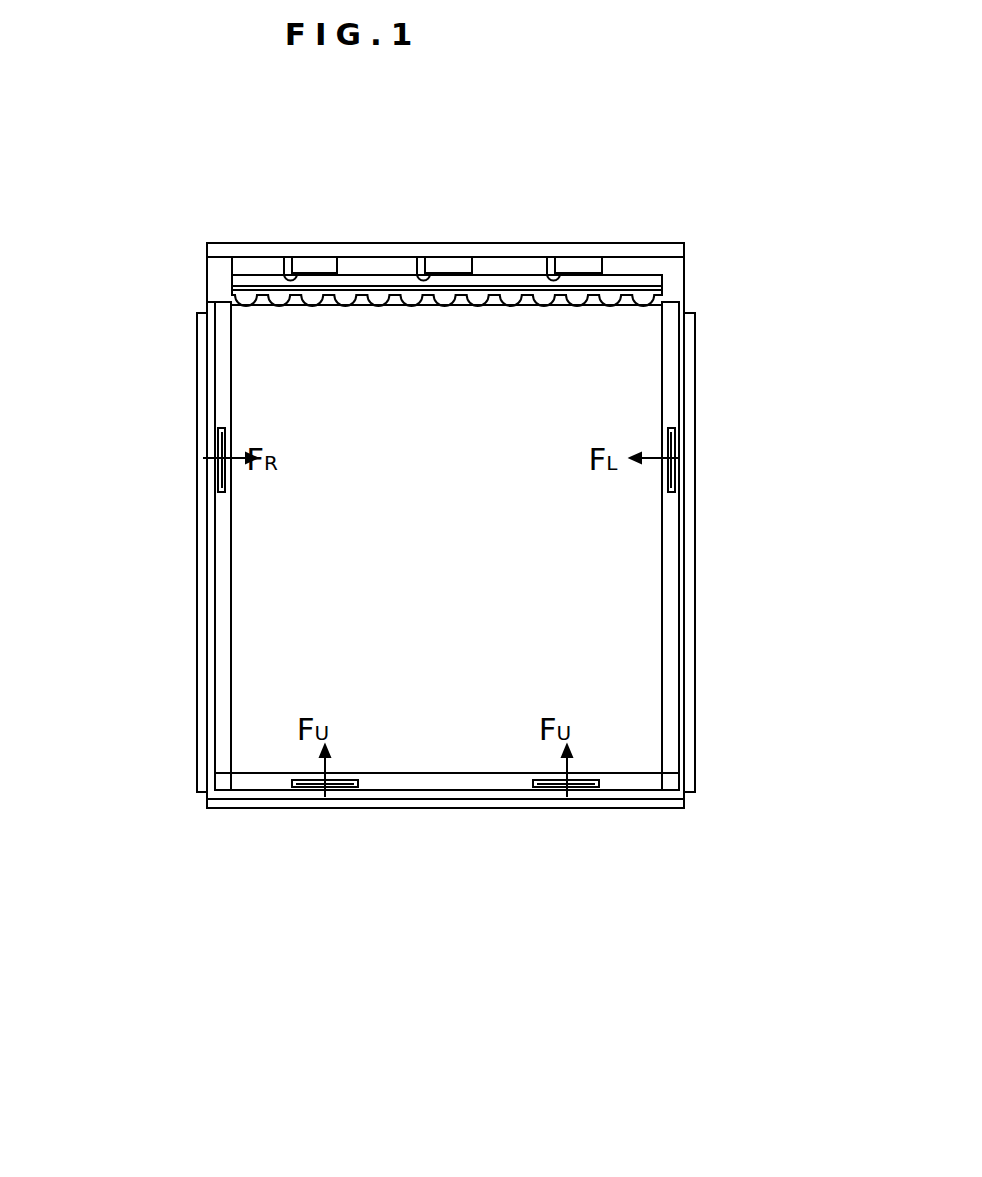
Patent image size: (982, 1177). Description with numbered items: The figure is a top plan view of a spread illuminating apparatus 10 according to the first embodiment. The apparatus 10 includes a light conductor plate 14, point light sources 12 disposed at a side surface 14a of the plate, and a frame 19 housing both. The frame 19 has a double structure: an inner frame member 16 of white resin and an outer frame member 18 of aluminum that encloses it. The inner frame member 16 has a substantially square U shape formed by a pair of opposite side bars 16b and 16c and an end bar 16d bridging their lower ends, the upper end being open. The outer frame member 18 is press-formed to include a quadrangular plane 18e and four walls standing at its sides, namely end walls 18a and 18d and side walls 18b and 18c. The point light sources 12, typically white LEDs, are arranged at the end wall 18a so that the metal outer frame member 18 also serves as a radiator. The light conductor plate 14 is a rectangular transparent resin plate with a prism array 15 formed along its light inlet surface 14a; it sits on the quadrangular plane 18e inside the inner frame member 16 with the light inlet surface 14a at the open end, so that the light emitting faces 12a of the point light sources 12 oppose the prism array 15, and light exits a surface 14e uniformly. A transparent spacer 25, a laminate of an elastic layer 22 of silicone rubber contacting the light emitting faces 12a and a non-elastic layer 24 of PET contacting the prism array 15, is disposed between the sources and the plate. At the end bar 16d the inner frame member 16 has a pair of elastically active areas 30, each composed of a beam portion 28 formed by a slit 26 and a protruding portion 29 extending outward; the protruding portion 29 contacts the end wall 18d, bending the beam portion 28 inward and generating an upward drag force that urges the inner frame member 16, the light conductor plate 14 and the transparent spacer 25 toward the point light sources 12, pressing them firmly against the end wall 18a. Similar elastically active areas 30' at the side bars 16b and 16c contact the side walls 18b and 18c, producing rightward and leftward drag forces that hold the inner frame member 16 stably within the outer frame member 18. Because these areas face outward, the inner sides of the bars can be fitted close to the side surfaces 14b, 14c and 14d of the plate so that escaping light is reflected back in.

The spread illuminating apparatus 10 is at (472, 918).
The point light source 12 is at (323, 263).
The light emitting face 12a is at (285, 257).
The light conductor plate 14 is at (644, 664).
The side surface (light inlet surface) 14a is at (298, 303).
The side surface 14b is at (230, 552).
The side surface 14c is at (664, 586).
The side surface 14d is at (435, 776).
The surface 14e is at (643, 688).
The prism array 15 is at (240, 300).
The inner frame member 16 is at (672, 357).
The side bar 16b is at (222, 373).
The side bar 16c is at (672, 418).
The end bar 16d is at (398, 783).
The outer frame member 18 is at (692, 388).
The end wall 18a is at (663, 250).
The side wall 18b is at (205, 650).
The side wall 18c is at (690, 556).
The end wall 18d is at (518, 803).
The quadrangular plane 18e is at (220, 283).
The frame 19 is at (779, 323).
The elastic layer 22 is at (665, 278).
The non-elastic layer 24 is at (668, 291).
The transparent spacer 25 is at (777, 232).
The slit 26 is at (212, 482).
The beam portion 28 is at (213, 443).
The protruding portion 29 is at (213, 457).
The elastically active area 30 is at (456, 862).
The elastically active area 30' is at (441, 460).